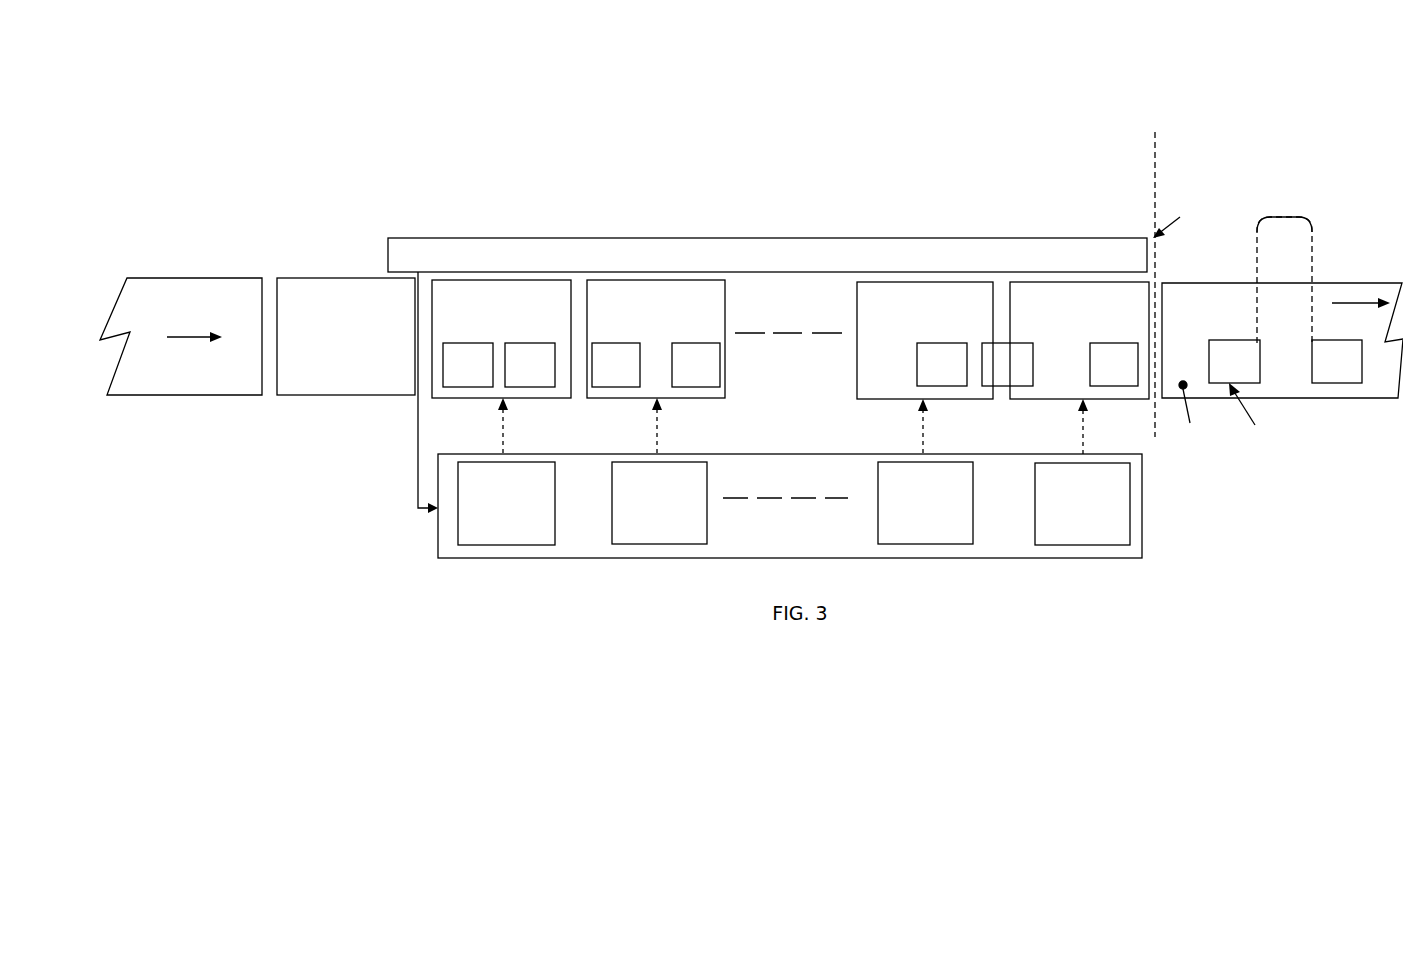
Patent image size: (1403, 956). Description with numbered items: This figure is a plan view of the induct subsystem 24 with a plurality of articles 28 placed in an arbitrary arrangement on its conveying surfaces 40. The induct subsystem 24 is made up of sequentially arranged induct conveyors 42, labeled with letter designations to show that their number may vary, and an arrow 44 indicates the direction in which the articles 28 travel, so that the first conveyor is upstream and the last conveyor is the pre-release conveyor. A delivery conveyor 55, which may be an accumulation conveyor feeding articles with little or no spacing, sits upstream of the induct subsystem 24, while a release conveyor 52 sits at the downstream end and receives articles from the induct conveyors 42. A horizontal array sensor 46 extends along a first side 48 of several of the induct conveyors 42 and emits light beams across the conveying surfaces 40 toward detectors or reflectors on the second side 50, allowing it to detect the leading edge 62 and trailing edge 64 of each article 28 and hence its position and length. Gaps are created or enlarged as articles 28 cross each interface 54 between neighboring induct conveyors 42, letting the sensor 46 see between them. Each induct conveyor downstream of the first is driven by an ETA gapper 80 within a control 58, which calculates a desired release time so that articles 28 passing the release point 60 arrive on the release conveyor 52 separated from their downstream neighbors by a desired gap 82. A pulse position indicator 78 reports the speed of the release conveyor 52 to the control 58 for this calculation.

The induct subsystem 24 is at (862, 66).
The articles 28 is at (463, 343).
The conveying surfaces 40 is at (368, 329).
The induct conveyors 42 is at (343, 398).
The arrow 44 is at (188, 340).
The horizontal array sensor 46 is at (748, 238).
The first side 48 is at (326, 253).
The second side 50 is at (326, 453).
The release conveyor 52 is at (1303, 387).
The interface 54 is at (420, 308).
The delivery conveyor 55 is at (198, 305).
The control 58 is at (1148, 540).
The release point 60 is at (1157, 182).
The leading edge 62 is at (1033, 358).
The trailing edge 64 is at (917, 362).
The pulse position indicator 78 is at (1183, 381).
The ETA gapper 80 is at (522, 545).
The desired gap 82 is at (1283, 217).